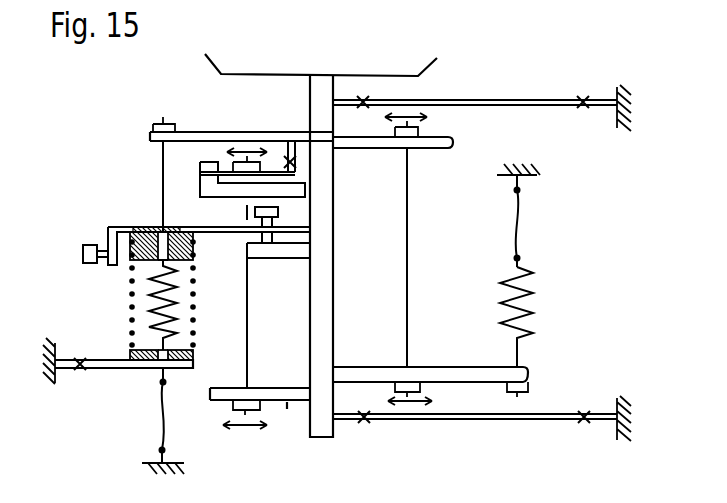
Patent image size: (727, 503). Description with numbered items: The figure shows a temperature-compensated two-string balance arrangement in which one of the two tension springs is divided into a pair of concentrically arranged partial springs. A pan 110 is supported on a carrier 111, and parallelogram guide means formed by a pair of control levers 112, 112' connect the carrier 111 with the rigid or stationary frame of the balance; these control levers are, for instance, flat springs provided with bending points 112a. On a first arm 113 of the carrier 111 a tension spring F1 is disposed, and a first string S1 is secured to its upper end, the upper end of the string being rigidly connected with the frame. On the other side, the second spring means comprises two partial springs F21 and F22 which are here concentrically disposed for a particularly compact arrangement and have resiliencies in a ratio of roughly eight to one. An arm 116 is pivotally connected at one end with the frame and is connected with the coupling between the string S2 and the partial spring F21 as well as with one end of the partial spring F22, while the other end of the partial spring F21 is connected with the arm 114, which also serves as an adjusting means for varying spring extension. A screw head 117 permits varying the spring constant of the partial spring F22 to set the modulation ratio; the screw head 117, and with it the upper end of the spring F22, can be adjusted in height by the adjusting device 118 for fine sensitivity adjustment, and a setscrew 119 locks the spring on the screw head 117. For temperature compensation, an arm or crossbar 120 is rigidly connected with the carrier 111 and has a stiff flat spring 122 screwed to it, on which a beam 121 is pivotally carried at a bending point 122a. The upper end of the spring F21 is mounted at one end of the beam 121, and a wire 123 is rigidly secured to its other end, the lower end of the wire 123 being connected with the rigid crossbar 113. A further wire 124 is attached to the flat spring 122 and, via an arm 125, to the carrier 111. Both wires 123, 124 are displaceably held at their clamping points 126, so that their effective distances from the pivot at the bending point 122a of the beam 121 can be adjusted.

The pan 110 is at (283, 74).
The carrier 111 is at (333, 289).
The control lever 112 is at (475, 80).
The control lever 112' is at (475, 438).
The bending point 112a is at (363, 96).
The first arm 113 is at (528, 377).
The arm 114 is at (108, 232).
The arm 116 is at (102, 368).
The screw head 117 is at (133, 229).
The adjusting device 118 is at (267, 243).
The setscrew 119 is at (88, 245).
The arm or crossbar 120 is at (200, 188).
The beam 121 is at (427, 148).
The flat spring 122 is at (280, 170).
The bending point 122a is at (290, 162).
The wire 123 is at (407, 289).
The wire 124 is at (247, 340).
The arm 125 is at (260, 413).
The clamping point 126 is at (237, 170).
The tension spring F1 is at (534, 294).
The partial spring F21 is at (130, 297).
The partial spring F22 is at (130, 333).
The first string S1 is at (520, 227).
The second string S2 is at (158, 426).